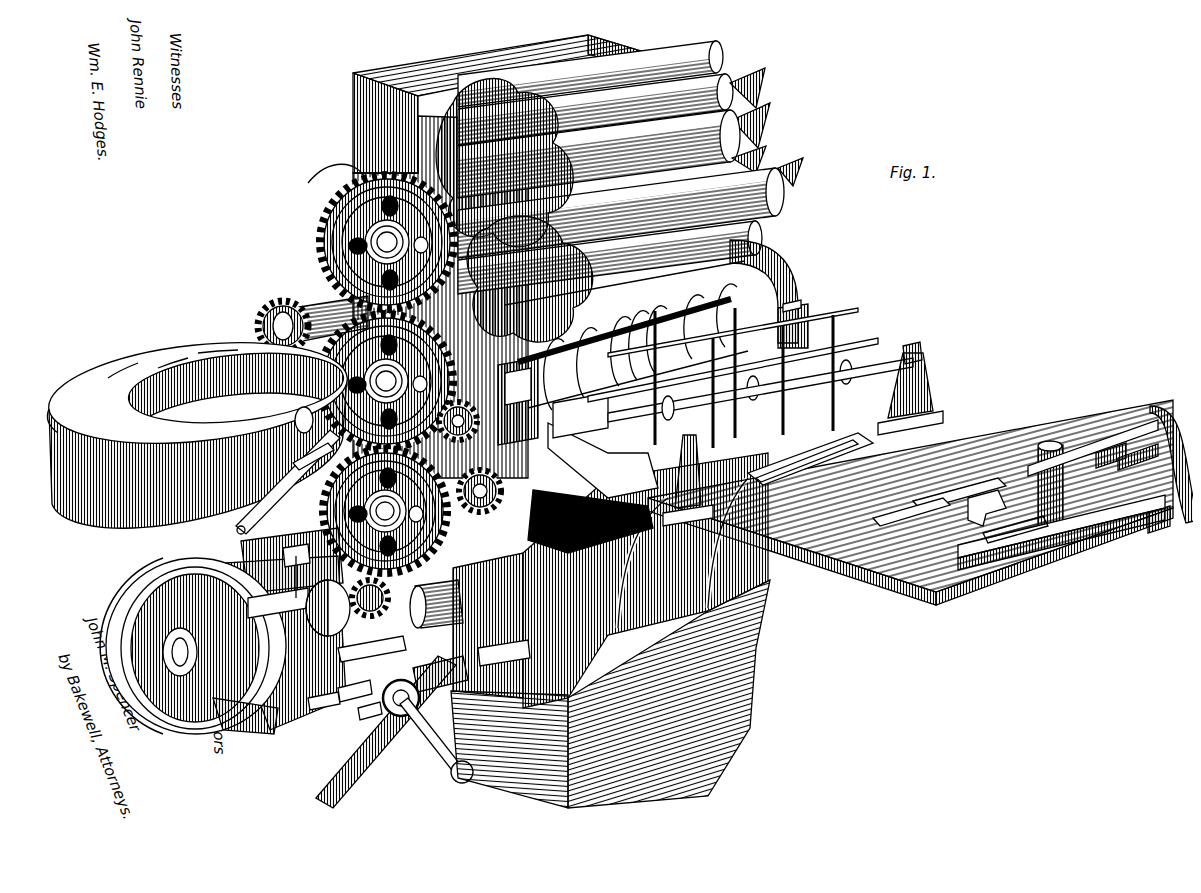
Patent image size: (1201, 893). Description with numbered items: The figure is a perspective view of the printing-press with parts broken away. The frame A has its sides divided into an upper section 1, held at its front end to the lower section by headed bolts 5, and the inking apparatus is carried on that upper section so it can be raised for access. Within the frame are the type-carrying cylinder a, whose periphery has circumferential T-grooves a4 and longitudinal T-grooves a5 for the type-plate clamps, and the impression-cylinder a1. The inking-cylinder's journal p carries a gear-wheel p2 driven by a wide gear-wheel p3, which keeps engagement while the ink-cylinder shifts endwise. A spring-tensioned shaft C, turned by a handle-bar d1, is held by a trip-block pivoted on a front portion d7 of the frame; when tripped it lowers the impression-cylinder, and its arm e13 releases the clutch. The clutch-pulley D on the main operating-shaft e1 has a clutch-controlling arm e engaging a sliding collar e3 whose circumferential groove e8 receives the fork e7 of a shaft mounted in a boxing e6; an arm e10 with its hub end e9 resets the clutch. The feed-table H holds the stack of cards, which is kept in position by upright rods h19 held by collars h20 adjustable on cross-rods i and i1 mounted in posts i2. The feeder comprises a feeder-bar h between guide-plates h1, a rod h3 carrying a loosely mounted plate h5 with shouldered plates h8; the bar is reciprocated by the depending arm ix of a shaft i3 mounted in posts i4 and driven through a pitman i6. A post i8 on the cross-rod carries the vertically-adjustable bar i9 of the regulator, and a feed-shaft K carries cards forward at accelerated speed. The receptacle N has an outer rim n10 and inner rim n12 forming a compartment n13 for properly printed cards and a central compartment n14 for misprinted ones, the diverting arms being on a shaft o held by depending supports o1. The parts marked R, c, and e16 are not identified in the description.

The ink trough R is at (497, 104).
The frame A is at (300, 184).
The upper section 1 is at (312, 175).
The journal p is at (630, 167).
The gear-wheel p2 is at (352, 170).
The wide gear-wheel p3 is at (276, 294).
The type-carrying cylinder a is at (742, 256).
The longitudinal T-grooves a5 is at (798, 297).
The headed bolts 5 is at (790, 298).
The circumferential T-grooves a4 is at (518, 401).
The impression-cylinder a1 is at (575, 445).
The receptacle N is at (198, 428).
The outer rim n10 is at (60, 396).
The inner circular rim n12 is at (200, 342).
The compartment n13 is at (112, 375).
The central compartment n14 is at (160, 365).
The shaft o is at (218, 496).
The depending supports o1 is at (246, 478).
The clutch-pulley D is at (223, 650).
The clutch-controlling arm e is at (299, 602).
The main operating-shaft e1 is at (168, 668).
The sliding collar e3 is at (360, 645).
The boxing e6 is at (334, 693).
The fork e7 is at (305, 700).
The circumferential groove e8 is at (304, 571).
The hub end e9 is at (355, 716).
The arm e10 is at (365, 731).
The arm e13 is at (470, 620).
The spring e16 is at (395, 751).
The shaft C is at (395, 728).
The handle-bar d1 is at (440, 770).
The front portion d7 is at (610, 694).
The bracket c is at (506, 658).
The feed-table H is at (910, 508).
The feeder-bar h is at (1045, 550).
The guide-plates h1 is at (1015, 556).
The rod h3 is at (858, 491).
The plate h5 is at (975, 500).
The shouldered plates h8 is at (810, 459).
The upright rods h19 is at (828, 325).
The collars h20 is at (860, 355).
The cross-rod i is at (905, 352).
The cross-rod i1 is at (790, 327).
The posts i2 is at (920, 395).
The shaft i3 is at (1100, 442).
The posts i4 is at (1172, 452).
The pitman i6 is at (1155, 520).
The post i8 is at (640, 312).
The vertically-adjustable bar i9 is at (626, 335).
The depending arm ix is at (1045, 440).
The feed-shaft K is at (733, 370).